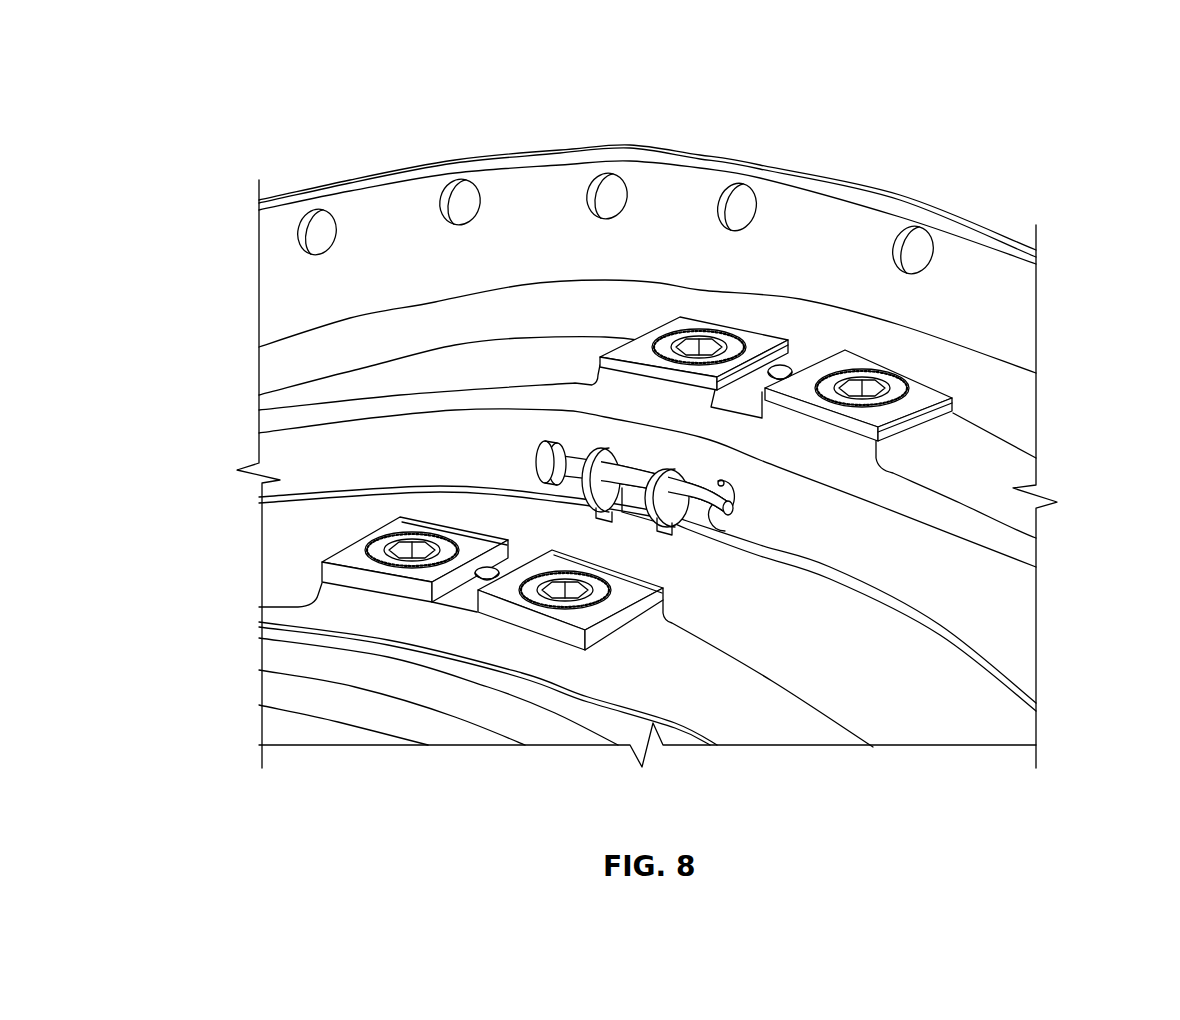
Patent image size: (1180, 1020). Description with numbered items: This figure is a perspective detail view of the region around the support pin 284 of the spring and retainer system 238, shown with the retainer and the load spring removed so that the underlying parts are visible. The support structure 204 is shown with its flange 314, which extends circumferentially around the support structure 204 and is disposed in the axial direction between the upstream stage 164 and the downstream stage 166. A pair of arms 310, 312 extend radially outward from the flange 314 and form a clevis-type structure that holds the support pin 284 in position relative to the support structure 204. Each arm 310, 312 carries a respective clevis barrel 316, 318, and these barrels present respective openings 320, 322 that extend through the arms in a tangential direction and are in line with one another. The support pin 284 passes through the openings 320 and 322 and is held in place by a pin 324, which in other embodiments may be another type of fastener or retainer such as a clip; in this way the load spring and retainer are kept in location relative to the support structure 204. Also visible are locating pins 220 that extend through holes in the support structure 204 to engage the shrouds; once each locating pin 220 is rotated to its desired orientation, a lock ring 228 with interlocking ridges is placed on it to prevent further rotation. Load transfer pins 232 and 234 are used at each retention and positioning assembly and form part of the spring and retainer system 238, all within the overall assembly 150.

The casing assembly 150 is at (943, 127).
The upstream stage 164 is at (243, 522).
The downstream stage 166 is at (243, 373).
The support structure 204 is at (1017, 425).
The locating pins 220 is at (731, 333).
The lock ring 228 is at (687, 322).
The load transfer pin 232 is at (485, 580).
The load transfer pin 234 is at (780, 364).
The spring and retainer system 238 is at (877, 528).
The support pin 284 is at (652, 478).
The arm 310 is at (585, 438).
The arm 312 is at (707, 474).
The flange 314 is at (985, 672).
The clevis barrel 316 is at (590, 488).
The clevis barrel 318 is at (657, 505).
The opening 320 is at (536, 458).
The opening 322 is at (730, 512).
The pin 324 is at (725, 530).